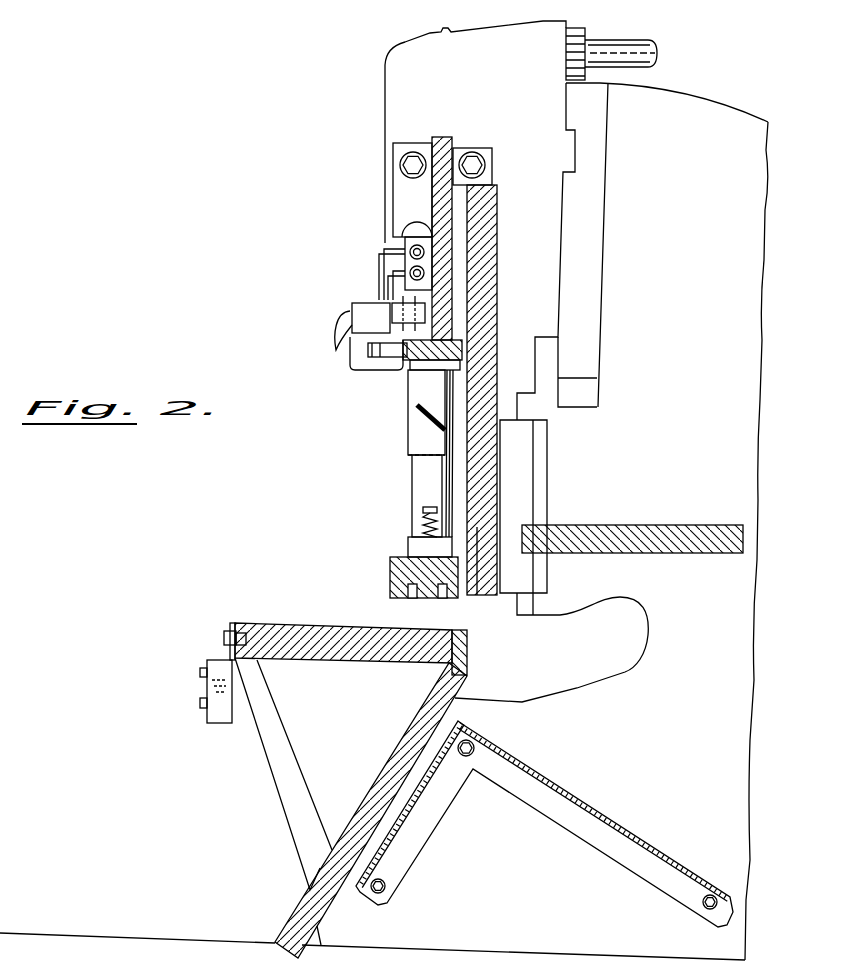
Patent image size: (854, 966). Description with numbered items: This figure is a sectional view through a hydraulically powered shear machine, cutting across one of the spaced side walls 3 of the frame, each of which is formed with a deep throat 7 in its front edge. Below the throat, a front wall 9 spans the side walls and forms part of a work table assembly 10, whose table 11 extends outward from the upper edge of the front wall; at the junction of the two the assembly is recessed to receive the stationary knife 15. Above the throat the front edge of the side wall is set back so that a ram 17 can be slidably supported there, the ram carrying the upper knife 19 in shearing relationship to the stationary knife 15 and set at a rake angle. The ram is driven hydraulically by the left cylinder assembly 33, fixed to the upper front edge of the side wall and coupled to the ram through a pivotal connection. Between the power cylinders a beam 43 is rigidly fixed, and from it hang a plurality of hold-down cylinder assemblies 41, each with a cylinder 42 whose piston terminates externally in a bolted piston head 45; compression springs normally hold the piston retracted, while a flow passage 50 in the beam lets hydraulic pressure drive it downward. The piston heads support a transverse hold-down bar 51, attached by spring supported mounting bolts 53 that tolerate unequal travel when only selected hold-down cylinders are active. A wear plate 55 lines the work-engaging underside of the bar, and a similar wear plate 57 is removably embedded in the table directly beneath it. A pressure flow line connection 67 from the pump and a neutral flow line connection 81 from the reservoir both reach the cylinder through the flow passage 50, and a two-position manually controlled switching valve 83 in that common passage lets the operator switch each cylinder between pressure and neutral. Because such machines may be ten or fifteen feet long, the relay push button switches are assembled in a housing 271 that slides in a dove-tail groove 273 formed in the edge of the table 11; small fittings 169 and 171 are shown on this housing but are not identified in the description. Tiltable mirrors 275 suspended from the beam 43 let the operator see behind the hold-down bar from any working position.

The side wall 3 is at (692, 118).
The throat 7 is at (648, 625).
The front wall 9 is at (375, 782).
The work table assembly 10 is at (358, 732).
The table 11 is at (313, 622).
The stationary knife 15 is at (467, 655).
The ram 17 is at (498, 278).
The upper knife 19 is at (471, 597).
The left cylinder assembly 33 is at (460, 104).
The hold-down cylinder assembly 41 is at (438, 489).
The hold-down cylinder 42 is at (408, 460).
The beam 43 is at (432, 200).
The piston head 45 is at (408, 545).
The flow passage 50 is at (380, 358).
The hold-down bar 51 is at (392, 575).
The spring supported mounting bolt 53 is at (422, 516).
The wear plate 55 is at (412, 598).
The wear plate 57 is at (441, 598).
The pressure flow line connection 67 is at (405, 277).
The neutral flow line connection 81 is at (410, 250).
The switching valve 83 is at (350, 316).
The stud 169 is at (203, 672).
The stud 171 is at (203, 703).
The housing 271 is at (215, 718).
The dove-tail groove 273 is at (237, 628).
The tiltable mirror 275 is at (424, 418).